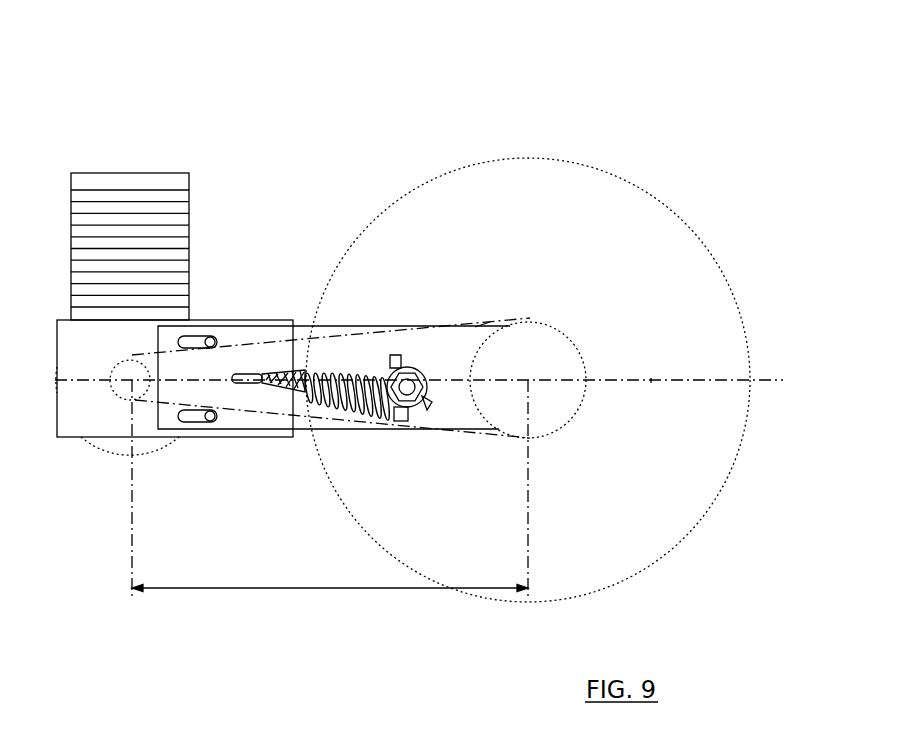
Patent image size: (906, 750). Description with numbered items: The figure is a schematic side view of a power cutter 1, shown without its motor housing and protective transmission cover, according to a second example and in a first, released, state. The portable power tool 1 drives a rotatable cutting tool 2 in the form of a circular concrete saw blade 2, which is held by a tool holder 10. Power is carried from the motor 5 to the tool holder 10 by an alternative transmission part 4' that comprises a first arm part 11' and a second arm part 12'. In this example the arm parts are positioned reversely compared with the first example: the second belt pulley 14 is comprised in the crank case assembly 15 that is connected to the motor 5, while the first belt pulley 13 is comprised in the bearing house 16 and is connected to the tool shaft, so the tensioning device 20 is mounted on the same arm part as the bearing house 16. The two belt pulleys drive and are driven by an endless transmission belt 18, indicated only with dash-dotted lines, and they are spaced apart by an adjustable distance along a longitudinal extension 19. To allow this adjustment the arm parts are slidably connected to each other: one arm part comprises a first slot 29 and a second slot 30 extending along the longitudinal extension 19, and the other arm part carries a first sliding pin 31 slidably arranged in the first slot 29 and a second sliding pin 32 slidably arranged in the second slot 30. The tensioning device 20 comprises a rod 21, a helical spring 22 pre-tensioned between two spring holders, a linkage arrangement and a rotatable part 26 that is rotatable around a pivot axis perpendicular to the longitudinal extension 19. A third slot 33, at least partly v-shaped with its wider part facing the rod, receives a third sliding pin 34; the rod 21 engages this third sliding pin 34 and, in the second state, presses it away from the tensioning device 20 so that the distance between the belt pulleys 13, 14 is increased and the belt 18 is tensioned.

The portable power tool 1 is at (630, 64).
The rotatable cutting tool 2 is at (653, 290).
The alternative transmission part 4' is at (334, 232).
The motor 5 is at (167, 195).
The tool holder 10 is at (557, 335).
The first arm part 11' is at (334, 226).
The second arm part 12' is at (159, 346).
The first belt pulley 13 is at (555, 420).
The second belt pulley 14 is at (125, 390).
The crank case assembly 15 is at (112, 405).
The bearing house 16 is at (578, 415).
The endless transmission belt 18 is at (475, 327).
The longitudinal extension 19 is at (651, 378).
The tensioning device 20 is at (365, 362).
The rod 21 is at (285, 377).
The helical spring 22 is at (337, 377).
The rotatable part 26 is at (417, 380).
The first slot 29 is at (195, 342).
The second slot 30 is at (195, 415).
The first sliding pin 31 is at (210, 342).
The second sliding pin 32 is at (210, 417).
The third slot 33 is at (238, 377).
The third sliding pin 34 is at (258, 377).